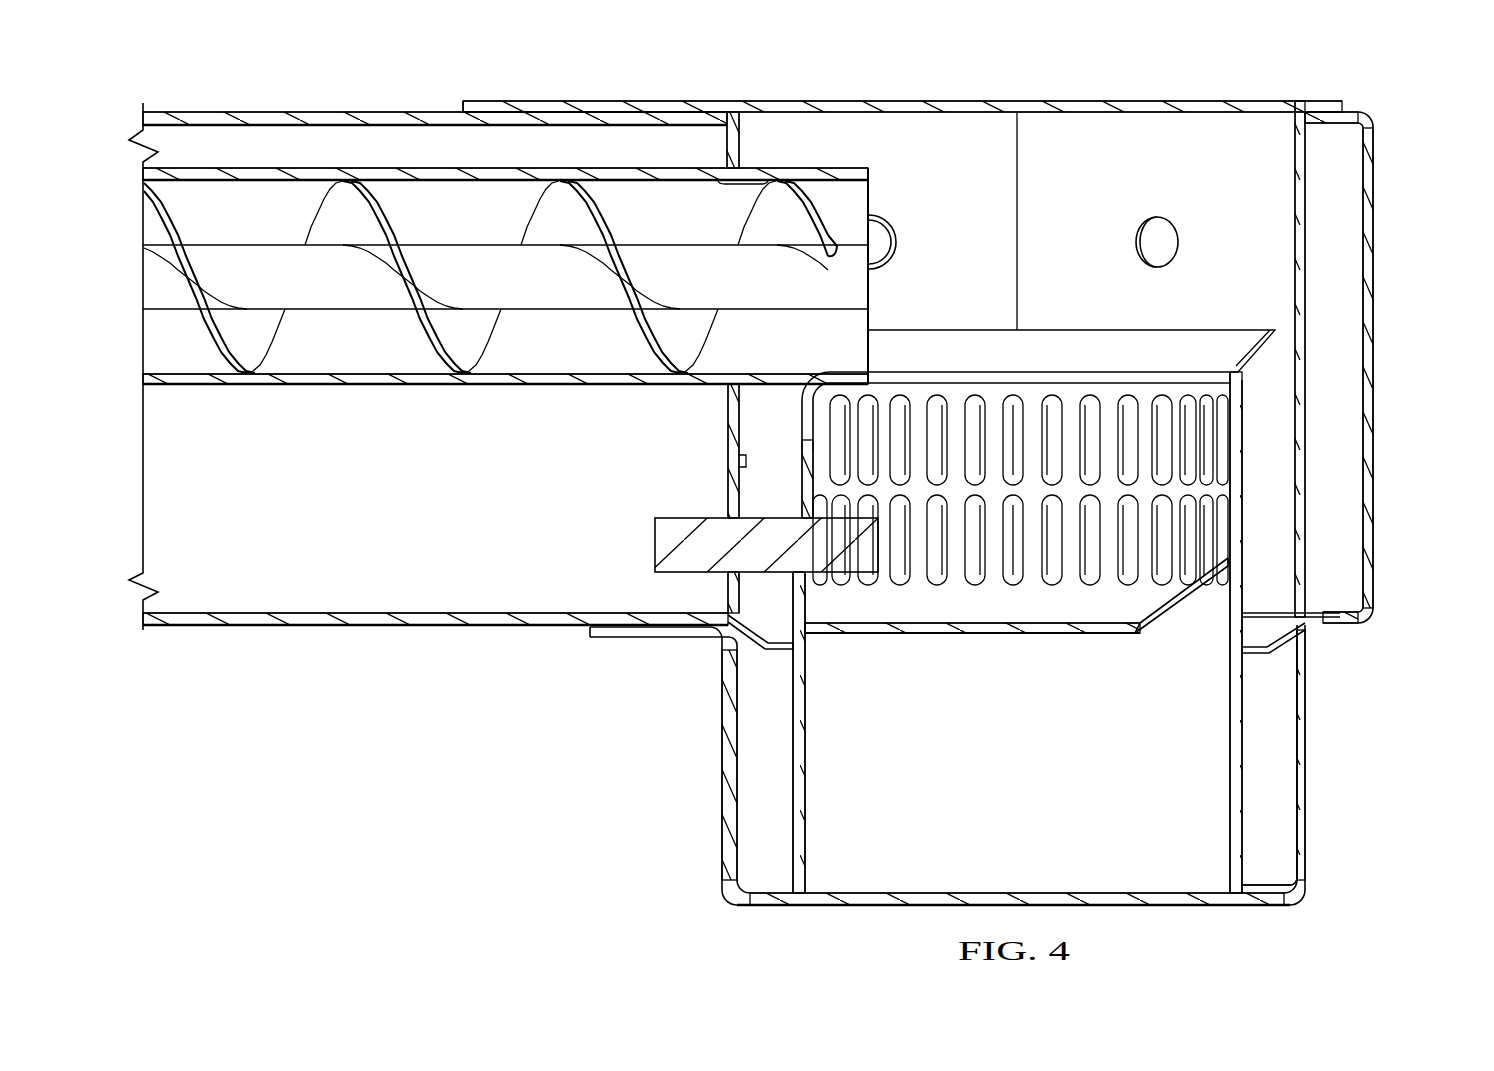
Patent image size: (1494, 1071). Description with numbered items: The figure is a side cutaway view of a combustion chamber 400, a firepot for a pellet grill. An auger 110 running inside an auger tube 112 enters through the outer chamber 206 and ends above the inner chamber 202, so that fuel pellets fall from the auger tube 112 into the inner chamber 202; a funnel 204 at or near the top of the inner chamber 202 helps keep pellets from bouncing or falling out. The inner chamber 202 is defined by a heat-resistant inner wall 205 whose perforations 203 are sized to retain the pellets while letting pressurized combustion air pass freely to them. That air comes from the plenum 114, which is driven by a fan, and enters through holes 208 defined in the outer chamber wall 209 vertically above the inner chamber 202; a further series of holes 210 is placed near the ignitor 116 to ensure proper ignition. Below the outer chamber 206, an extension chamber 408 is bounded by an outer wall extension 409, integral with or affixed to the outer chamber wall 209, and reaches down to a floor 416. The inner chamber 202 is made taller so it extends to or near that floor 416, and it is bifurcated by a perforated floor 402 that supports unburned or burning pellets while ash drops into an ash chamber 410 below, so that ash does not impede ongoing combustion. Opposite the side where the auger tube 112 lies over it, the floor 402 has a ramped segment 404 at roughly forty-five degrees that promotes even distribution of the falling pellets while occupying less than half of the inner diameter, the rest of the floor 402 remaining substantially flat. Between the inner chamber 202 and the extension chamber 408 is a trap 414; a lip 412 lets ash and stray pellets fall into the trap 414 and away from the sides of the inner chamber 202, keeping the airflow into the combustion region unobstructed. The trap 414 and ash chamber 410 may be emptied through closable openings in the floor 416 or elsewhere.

The auger 110 is at (463, 245).
The auger tube 112 is at (340, 386).
The plenum 114 is at (430, 626).
The ignitor 116 is at (657, 545).
The inner chamber 202 is at (1003, 448).
The perforations 203 is at (1113, 388).
The funnel 204 is at (1212, 335).
The inner wall 205 is at (1242, 483).
The outer chamber 206 is at (1262, 433).
The holes 208 is at (892, 233).
The outer chamber wall 209 is at (1305, 262).
The holes 210 is at (733, 461).
The combustion chamber 400 is at (1229, 97).
The floor 402 is at (1030, 634).
The ramped segment 404 is at (1165, 613).
The extension chamber 408 is at (1266, 722).
The outer wall extension 409 is at (1305, 780).
The ash chamber 410 is at (1130, 874).
The lip 412 is at (1305, 641).
The trap 414 is at (1272, 872).
The floor 416 is at (1258, 907).